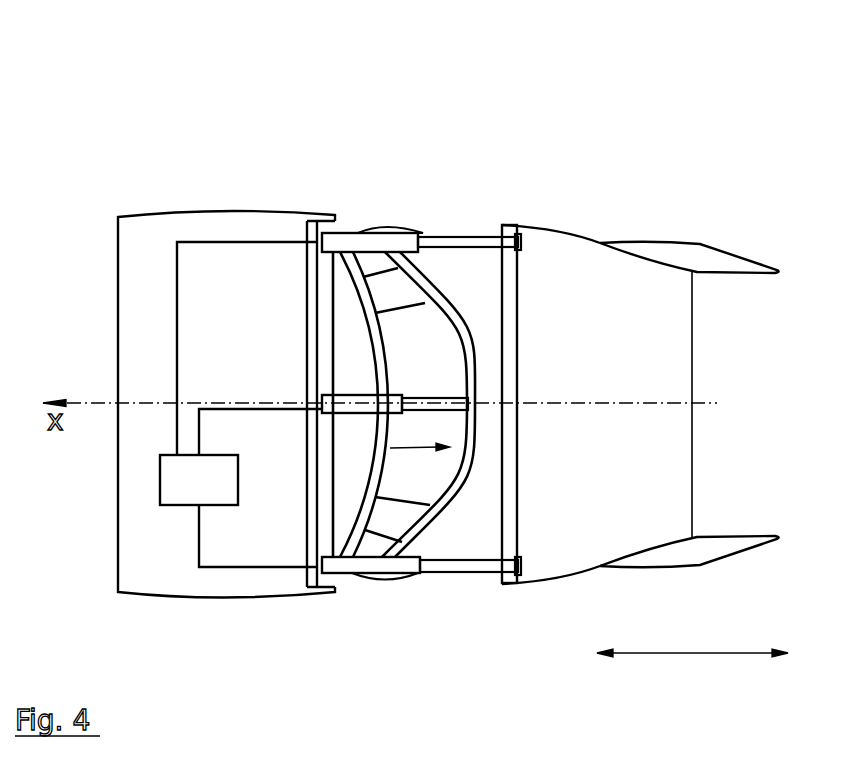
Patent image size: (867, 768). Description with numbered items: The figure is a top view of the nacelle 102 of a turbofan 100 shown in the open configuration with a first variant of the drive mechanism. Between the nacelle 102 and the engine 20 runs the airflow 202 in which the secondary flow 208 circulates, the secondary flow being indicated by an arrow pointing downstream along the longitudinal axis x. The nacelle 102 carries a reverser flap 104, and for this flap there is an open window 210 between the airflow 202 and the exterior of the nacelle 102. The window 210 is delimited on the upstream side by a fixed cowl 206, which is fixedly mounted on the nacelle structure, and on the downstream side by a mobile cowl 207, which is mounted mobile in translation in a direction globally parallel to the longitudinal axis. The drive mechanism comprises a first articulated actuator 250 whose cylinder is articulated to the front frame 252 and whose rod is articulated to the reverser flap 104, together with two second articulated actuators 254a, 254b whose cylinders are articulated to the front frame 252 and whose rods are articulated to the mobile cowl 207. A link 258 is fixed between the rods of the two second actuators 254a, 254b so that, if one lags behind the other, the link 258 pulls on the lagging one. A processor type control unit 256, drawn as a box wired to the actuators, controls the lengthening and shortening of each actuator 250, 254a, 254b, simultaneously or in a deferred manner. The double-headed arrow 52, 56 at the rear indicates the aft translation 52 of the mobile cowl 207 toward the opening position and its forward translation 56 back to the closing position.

The turbofan 100 is at (738, 107).
The nacelle 102 is at (167, 120).
The reverser flap 104 is at (430, 267).
The engine 20 is at (403, 350).
The airflow 202 is at (417, 483).
The fixed cowl 206 is at (145, 360).
The mobile cowl 207 is at (673, 338).
The secondary flow 208 is at (413, 449).
The window 210 is at (450, 273).
The first articulated actuator 250 is at (348, 396).
The front frame 252 is at (328, 305).
The second articulated actuator 254a is at (310, 240).
The second articulated actuator 254b is at (313, 575).
The control unit 256 is at (228, 498).
The link 258 is at (518, 527).
The aft translation arrow 52 is at (749, 679).
The forward translation arrow 56 is at (644, 679).